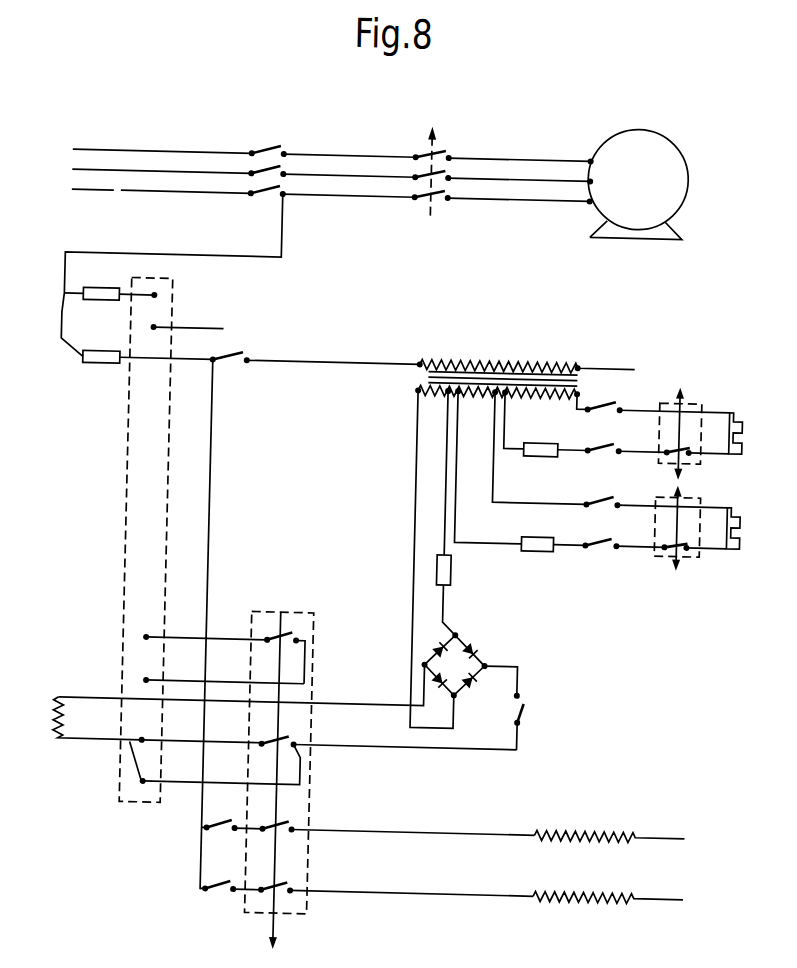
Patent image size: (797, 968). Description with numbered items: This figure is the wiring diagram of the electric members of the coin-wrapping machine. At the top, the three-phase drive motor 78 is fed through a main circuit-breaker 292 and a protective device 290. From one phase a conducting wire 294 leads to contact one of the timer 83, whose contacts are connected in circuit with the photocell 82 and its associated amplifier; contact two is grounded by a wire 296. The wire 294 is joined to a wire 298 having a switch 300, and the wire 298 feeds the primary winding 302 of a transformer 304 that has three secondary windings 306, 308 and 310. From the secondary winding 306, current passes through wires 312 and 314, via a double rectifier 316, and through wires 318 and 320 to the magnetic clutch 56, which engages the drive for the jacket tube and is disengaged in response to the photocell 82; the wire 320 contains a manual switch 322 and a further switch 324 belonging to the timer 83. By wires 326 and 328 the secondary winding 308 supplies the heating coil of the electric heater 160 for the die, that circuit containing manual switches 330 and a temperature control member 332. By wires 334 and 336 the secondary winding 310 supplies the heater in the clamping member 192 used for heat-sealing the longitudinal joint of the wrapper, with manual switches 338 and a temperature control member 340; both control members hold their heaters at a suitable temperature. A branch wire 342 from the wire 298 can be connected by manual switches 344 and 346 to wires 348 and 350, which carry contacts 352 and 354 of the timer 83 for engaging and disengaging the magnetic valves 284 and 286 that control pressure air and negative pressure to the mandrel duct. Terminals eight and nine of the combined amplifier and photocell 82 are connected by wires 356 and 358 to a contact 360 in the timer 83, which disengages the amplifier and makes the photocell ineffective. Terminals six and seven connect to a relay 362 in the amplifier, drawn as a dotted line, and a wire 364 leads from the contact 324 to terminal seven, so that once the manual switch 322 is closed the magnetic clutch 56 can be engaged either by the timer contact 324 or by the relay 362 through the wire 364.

The main circuit-breaker 292 is at (249, 148).
The protective device 290 is at (414, 202).
The drive motor 78 is at (672, 197).
The conducting wire 294 is at (220, 261).
The wire 298 is at (135, 371).
The wire 296 is at (190, 333).
The switch 300 is at (241, 350).
The photocell 82 is at (134, 556).
The branch wire 342 is at (209, 558).
The primary winding 302 is at (513, 380).
The transformer 304 is at (513, 376).
The secondary winding 306 is at (435, 394).
The secondary winding 308 is at (470, 404).
The secondary winding 310 is at (519, 392).
The wire 336 is at (583, 403).
The manual switches 338 is at (603, 444).
The wire 334 is at (562, 448).
The temperature control member 340 is at (662, 446).
The clamping member 192 is at (733, 395).
The wire 328 is at (511, 499).
The manual switches 330 is at (597, 531).
The wire 326 is at (469, 540).
The temperature control member 332 is at (688, 506).
The electric heater 160 is at (738, 542).
The wire 314 is at (449, 604).
The wire 312 is at (414, 622).
The double rectifier 316 is at (455, 666).
The wire 318 is at (349, 704).
The manual switch 322 is at (534, 694).
The wire 320 is at (359, 750).
The magnetic clutch 56 is at (72, 724).
The switch 324 is at (298, 738).
The wire 364 is at (228, 786).
The relay 362 is at (139, 770).
The wire 356 is at (231, 641).
The contact 360 is at (291, 636).
The wire 358 is at (232, 686).
The timer 83 is at (317, 907).
The manual switch 344 is at (209, 834).
The wire 348 is at (260, 834).
The contact 352 is at (296, 826).
The magnetic valve 284 is at (614, 829).
The manual switch 346 is at (210, 888).
The wire 350 is at (261, 894).
The contact 354 is at (292, 883).
The magnetic valve 286 is at (616, 900).